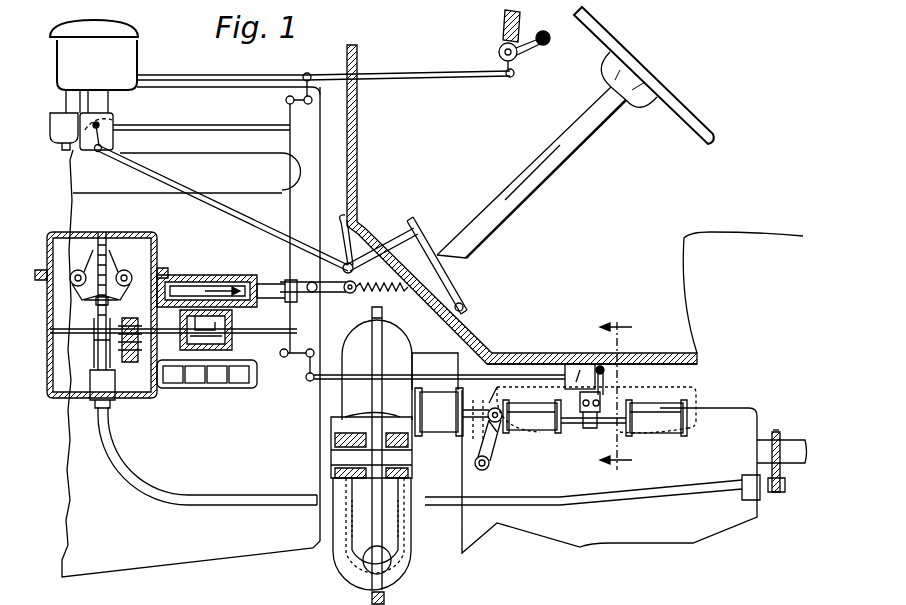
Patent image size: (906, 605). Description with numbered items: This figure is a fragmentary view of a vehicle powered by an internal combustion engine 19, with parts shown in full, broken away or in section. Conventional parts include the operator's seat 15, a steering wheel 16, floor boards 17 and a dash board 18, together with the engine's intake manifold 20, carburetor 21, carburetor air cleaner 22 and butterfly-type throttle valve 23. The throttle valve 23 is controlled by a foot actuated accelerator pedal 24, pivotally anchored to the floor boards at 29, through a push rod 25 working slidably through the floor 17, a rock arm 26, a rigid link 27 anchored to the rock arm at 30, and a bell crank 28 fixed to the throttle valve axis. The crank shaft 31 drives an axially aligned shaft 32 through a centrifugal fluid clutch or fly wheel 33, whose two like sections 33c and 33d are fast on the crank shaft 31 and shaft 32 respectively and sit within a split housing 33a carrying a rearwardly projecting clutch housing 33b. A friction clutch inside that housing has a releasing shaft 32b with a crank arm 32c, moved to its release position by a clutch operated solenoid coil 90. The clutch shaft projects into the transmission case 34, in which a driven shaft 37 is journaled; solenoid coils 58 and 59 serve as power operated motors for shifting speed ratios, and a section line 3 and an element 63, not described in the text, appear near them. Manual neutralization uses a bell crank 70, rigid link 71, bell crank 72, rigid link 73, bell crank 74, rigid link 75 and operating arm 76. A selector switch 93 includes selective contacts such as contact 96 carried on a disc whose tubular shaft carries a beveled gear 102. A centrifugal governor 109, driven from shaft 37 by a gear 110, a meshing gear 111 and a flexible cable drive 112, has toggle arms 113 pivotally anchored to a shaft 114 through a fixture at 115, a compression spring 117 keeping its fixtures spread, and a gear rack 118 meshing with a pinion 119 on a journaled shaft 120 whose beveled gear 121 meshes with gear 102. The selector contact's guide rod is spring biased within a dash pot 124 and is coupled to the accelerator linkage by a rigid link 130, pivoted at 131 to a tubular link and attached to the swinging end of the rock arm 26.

The section line 3- 3 is at (624, 382).
The operator's seat 15 is at (745, 228).
The steering wheel 16 is at (680, 120).
The floor boards 17 is at (534, 352).
The dash board 18 is at (358, 154).
The internal combustion engine 19 is at (332, 135).
The intake manifold 20 is at (228, 162).
The carburetor 21 is at (113, 120).
The carburetor air cleaner 22 is at (137, 62).
The throttle valve 23 is at (113, 140).
The accelerator pedal 24 is at (447, 258).
The push rod 25 is at (418, 240).
The rock arm 26 is at (375, 225).
The rigid link 27 is at (262, 224).
The bell crank 28 is at (62, 150).
The pivotal anchorage 29 is at (466, 306).
The pivotal anchorage 30 is at (359, 270).
The crank shaft 31 is at (340, 452).
The shaft 32 is at (400, 456).
The releasing shaft 32b is at (492, 465).
The crank arm 32c is at (497, 440).
The centrifugal fluid type clutch or fly wheel 33 is at (366, 530).
The split housing 33a is at (372, 598).
The clutch housing 33b is at (455, 548).
The fluid clutch section 33c is at (360, 510).
The fluid clutch section 33d is at (395, 518).
The transmission case 34 is at (615, 536).
The driven shaft 37 is at (792, 440).
The solenoid coil 58 is at (660, 410).
The solenoid coil 59 is at (532, 409).
The valve block 63 is at (584, 364).
The bell crank 70 is at (528, 50).
The rigid link 71 is at (440, 78).
The bell crank 72 is at (286, 88).
The rigid link 73 is at (300, 252).
The bell crank 74 is at (298, 366).
The rigid link 75 is at (437, 372).
The operating arm 76 is at (606, 384).
The clutch operated solenoid coil 90 is at (452, 412).
The selector switch 93 is at (202, 272).
The selective contact 96 is at (603, 425).
The beveled gear 102 is at (220, 330).
The centrifugal governor 109 is at (134, 255).
The gear 110 is at (776, 428).
The gear 111 is at (777, 494).
The flexible cable drive 112 is at (132, 495).
The toggle arms 113 is at (78, 262).
The shaft 114 is at (98, 360).
The pivotal anchorage 115 is at (110, 252).
The compression spring 117 is at (92, 293).
The gear rack 118 is at (147, 385).
The pinion 119 is at (135, 350).
The journaled shaft 120 is at (62, 350).
The beveled gear 121 is at (200, 355).
The dash pot 124 is at (268, 300).
The rigid link 130 is at (338, 294).
The pivotal connection 131 is at (312, 281).